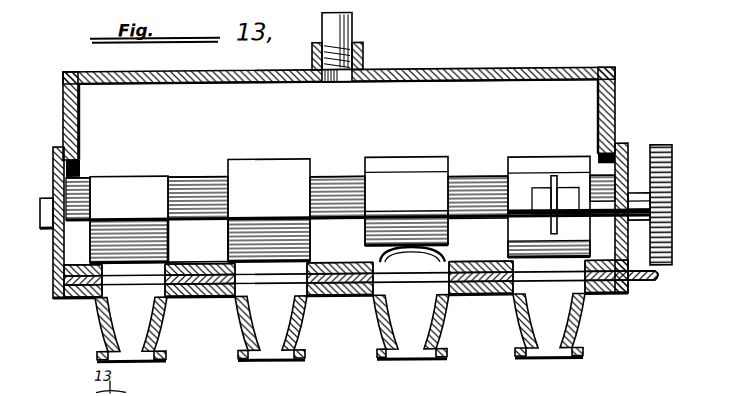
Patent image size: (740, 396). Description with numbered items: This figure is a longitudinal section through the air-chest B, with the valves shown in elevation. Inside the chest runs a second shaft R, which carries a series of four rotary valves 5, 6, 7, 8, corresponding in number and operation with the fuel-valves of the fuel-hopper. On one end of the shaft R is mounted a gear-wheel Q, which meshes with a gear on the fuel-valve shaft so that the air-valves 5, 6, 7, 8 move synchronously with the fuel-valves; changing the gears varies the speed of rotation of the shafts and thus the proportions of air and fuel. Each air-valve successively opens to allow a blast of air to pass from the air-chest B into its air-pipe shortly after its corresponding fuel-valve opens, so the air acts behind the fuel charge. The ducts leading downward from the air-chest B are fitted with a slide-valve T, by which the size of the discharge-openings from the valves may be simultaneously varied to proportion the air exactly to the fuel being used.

The air-chest B is at (325, 186).
The second shaft R is at (343, 221).
The rotary valve 5 is at (129, 219).
The rotary valve 6 is at (269, 210).
The rotary valve 7 is at (406, 201).
The rotary valve 8 is at (579, 206).
The gear-wheel Q is at (672, 252).
The slide-valve T is at (638, 288).